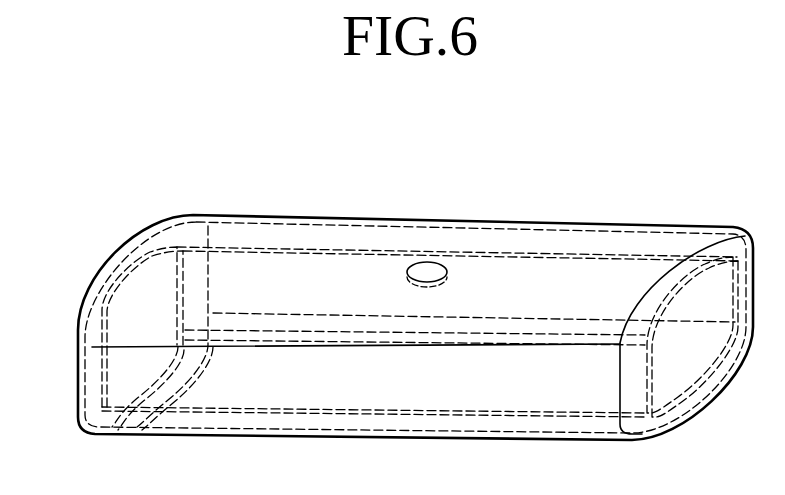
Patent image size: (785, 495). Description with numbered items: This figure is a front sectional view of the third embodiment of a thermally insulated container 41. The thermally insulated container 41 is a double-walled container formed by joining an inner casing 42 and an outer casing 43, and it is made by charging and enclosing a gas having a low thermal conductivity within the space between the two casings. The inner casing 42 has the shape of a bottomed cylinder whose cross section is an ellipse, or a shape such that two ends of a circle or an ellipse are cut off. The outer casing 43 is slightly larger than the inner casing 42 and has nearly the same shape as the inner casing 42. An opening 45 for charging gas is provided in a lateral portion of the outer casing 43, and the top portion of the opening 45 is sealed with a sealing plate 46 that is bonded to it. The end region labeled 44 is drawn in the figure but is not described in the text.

The thermally insulated container 41 is at (433, 205).
The inner casing 42 is at (652, 250).
The outer casing 43 is at (628, 223).
The end cap 44 is at (141, 302).
The opening for charging gas 45 is at (433, 277).
The sealing plate 46 is at (423, 271).